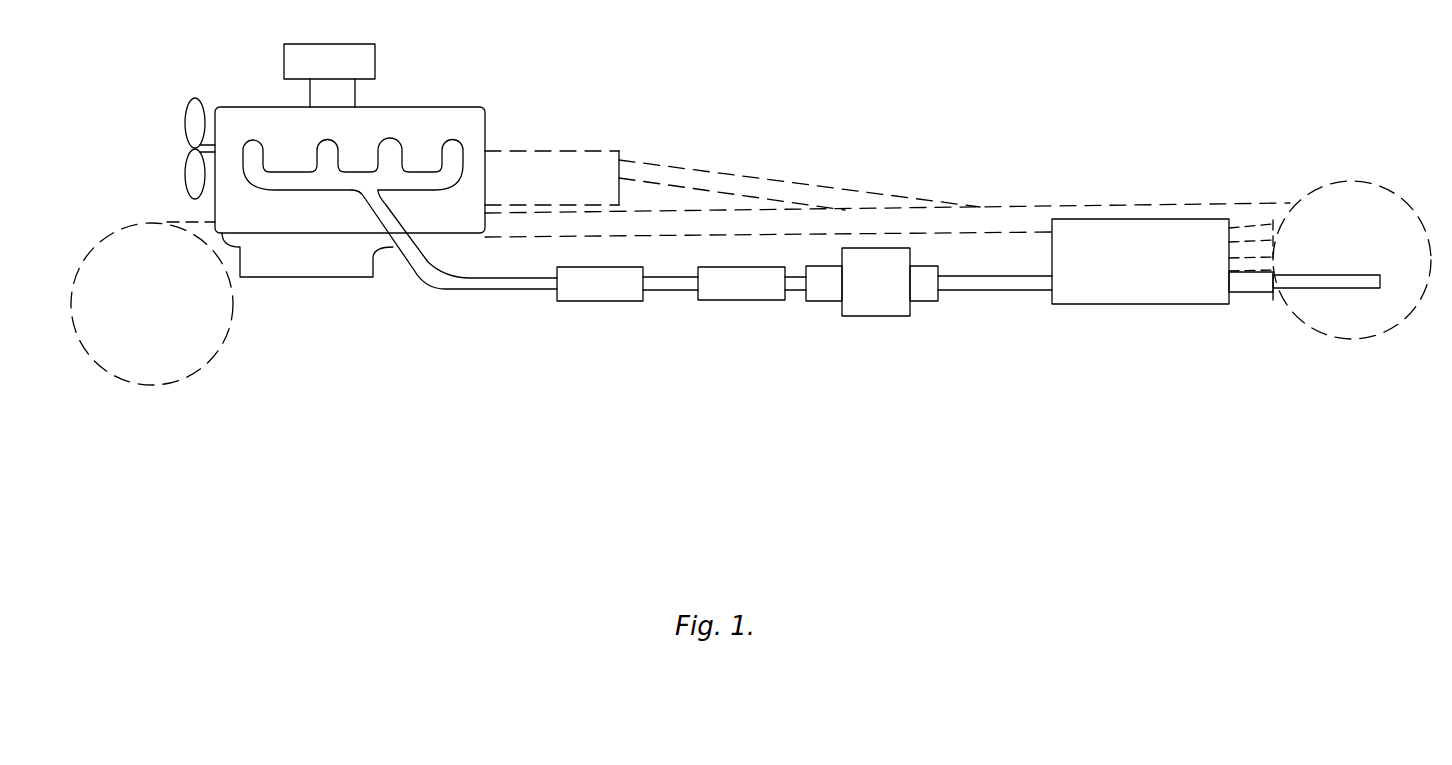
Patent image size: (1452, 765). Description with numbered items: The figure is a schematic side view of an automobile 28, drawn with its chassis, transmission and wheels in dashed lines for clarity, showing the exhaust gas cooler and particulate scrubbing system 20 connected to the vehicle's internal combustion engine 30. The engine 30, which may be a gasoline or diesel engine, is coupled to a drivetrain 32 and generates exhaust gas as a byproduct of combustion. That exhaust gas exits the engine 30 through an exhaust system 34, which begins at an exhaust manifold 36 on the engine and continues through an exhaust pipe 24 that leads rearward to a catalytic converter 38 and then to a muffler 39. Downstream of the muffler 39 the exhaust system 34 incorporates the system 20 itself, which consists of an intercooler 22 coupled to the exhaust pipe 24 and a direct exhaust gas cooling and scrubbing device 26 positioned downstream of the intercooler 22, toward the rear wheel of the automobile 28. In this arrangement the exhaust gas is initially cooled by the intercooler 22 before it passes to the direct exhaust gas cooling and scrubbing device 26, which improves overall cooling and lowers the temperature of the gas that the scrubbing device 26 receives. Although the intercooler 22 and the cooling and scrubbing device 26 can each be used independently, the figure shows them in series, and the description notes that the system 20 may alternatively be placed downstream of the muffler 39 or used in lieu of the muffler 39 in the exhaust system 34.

The exhaust gas cooler and particulate scrubbing system 20 is at (970, 368).
The intercooler 22 is at (869, 316).
The exhaust pipe 24 is at (688, 292).
The direct exhaust gas cooling and scrubbing device 26 is at (1148, 306).
The automobile 28 is at (970, 78).
The internal combustion engine 30 is at (343, 187).
The drivetrain 32 is at (565, 151).
The exhaust system 34 is at (461, 294).
The exhaust manifold 36 is at (287, 190).
The catalytic converter 38 is at (577, 302).
The muffler 39 is at (760, 302).